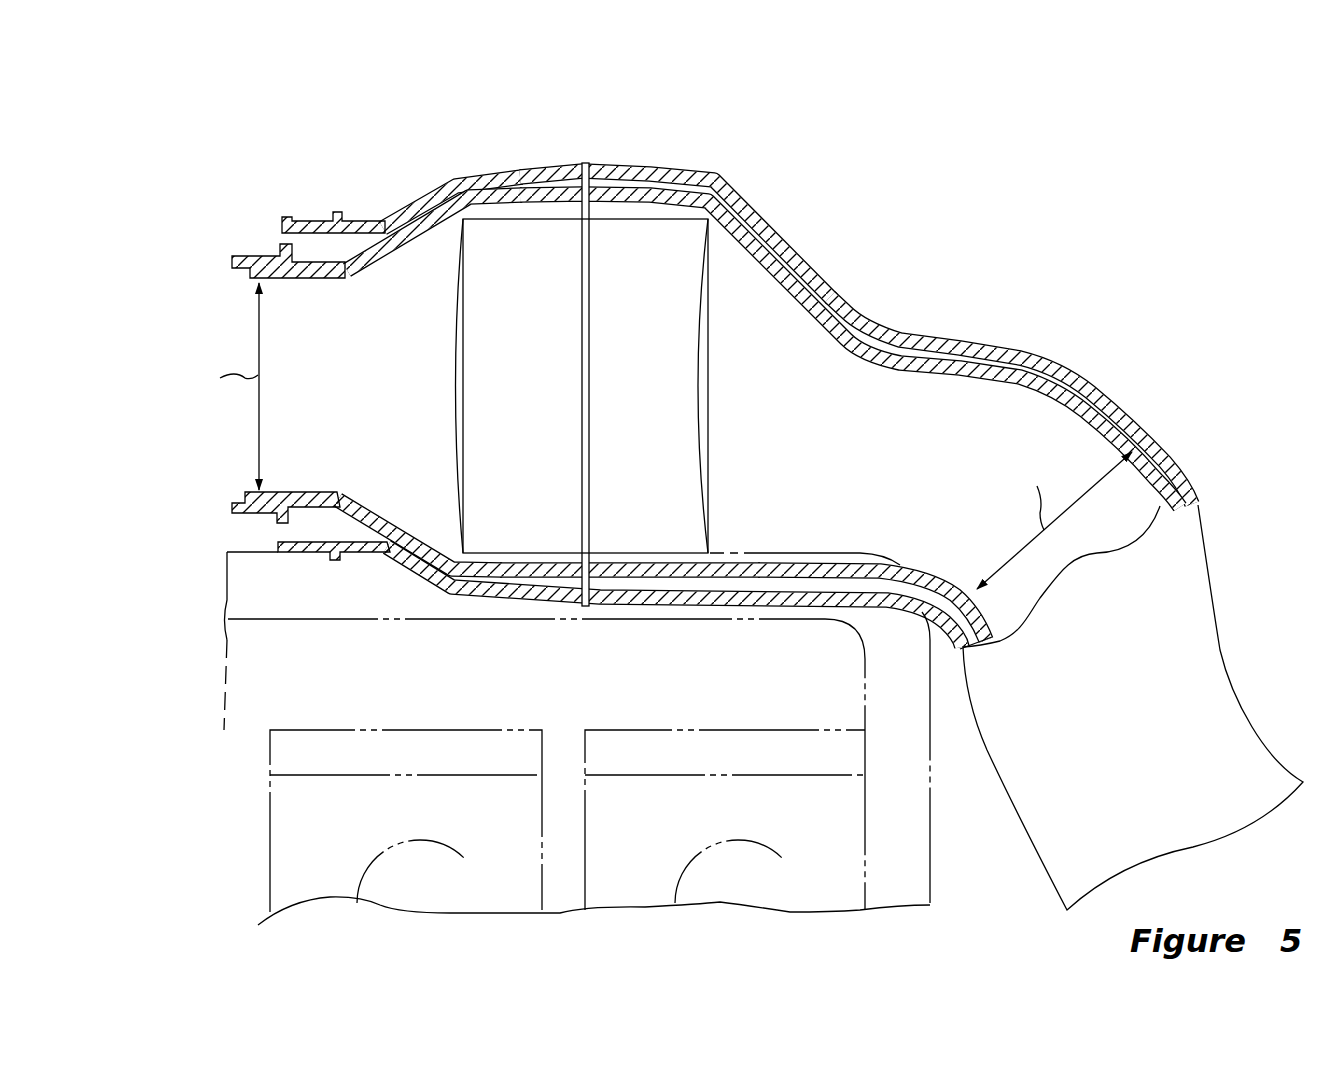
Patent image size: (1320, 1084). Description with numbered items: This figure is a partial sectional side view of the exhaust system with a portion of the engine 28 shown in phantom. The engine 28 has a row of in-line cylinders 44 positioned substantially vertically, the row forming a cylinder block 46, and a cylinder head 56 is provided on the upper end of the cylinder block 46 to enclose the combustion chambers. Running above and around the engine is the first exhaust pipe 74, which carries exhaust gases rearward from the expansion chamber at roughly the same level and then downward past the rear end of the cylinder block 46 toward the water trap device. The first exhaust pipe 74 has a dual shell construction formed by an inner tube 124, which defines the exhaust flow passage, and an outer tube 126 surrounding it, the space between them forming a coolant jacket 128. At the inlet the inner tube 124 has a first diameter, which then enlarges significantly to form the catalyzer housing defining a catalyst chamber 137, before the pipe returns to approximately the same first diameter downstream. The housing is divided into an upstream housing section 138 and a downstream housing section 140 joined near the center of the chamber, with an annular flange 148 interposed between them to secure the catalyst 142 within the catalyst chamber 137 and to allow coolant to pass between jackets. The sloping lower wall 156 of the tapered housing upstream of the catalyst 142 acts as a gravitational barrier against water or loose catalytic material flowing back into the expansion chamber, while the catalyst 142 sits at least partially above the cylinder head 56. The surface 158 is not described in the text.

The engine 28 is at (934, 845).
The cylinders 44 is at (358, 824).
The cylinder block 46 is at (252, 702).
The cylinder head 56 is at (250, 589).
The first exhaust pipe 74 is at (685, 383).
The inner tube 124 is at (1032, 386).
The outer tube 126 is at (1050, 358).
The coolant jacket 128 is at (349, 246).
The catalyst chamber 137 is at (478, 205).
The upstream housing section 138 is at (409, 196).
The downstream housing section 140 is at (779, 223).
The catalyst 142 is at (704, 391).
The annular flange 148 is at (588, 162).
The lower wall 156 is at (394, 508).
The lower wall surface 158 is at (748, 560).